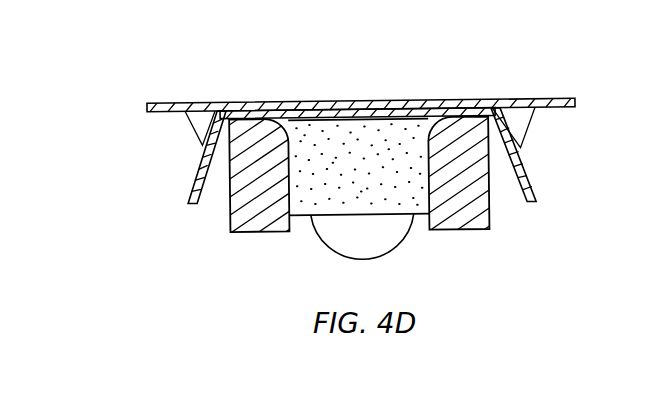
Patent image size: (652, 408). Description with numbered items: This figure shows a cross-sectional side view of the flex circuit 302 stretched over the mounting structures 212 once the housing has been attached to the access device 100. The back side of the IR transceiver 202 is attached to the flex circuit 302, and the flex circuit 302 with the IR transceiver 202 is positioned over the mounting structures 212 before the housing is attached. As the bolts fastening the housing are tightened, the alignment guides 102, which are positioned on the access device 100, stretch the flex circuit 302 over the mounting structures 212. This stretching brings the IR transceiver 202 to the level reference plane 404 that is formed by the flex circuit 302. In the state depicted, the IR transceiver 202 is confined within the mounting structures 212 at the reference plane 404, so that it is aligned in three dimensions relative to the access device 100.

The access device 100 is at (502, 98).
The reference plane 404 is at (356, 112).
The alignment guides 102 is at (191, 124).
The flex circuit 302 is at (188, 186).
The mounting structures 212 is at (232, 233).
The IR transceiver 202 is at (415, 217).